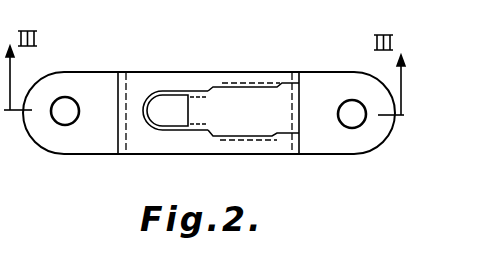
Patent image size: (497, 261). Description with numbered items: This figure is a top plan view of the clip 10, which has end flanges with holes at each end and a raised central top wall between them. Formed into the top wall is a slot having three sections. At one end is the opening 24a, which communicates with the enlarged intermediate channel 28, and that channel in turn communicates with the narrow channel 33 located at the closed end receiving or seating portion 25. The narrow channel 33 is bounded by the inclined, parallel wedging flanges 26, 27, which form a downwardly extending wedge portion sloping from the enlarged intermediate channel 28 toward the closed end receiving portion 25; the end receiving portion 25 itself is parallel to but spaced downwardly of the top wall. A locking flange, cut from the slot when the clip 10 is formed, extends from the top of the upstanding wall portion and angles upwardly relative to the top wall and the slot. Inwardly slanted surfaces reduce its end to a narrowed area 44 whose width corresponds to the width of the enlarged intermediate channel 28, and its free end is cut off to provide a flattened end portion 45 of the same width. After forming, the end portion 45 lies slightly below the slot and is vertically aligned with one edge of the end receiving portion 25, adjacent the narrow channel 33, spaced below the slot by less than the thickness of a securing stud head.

The clip 10 is at (258, 12).
The opening 24a is at (252, 110).
The end receiving portion 25 is at (157, 91).
The wedging flange 26 is at (175, 93).
The wedging flange 27 is at (194, 131).
The enlarged intermediate channel 28 is at (228, 117).
The narrow channel 33 is at (168, 110).
The narrowed area 44 is at (221, 118).
The flattened end portion 45 is at (187, 113).